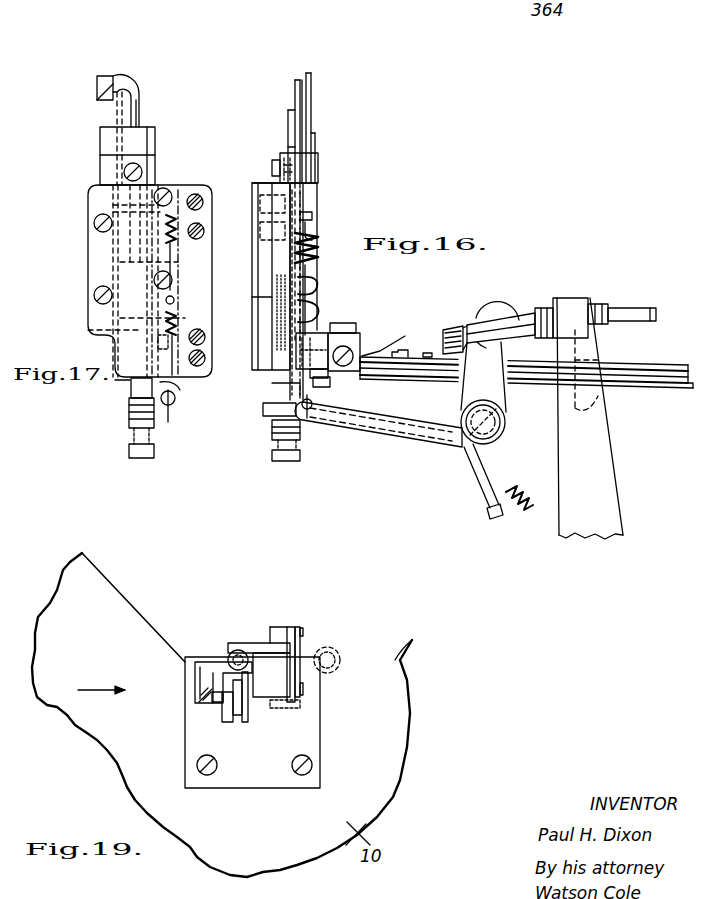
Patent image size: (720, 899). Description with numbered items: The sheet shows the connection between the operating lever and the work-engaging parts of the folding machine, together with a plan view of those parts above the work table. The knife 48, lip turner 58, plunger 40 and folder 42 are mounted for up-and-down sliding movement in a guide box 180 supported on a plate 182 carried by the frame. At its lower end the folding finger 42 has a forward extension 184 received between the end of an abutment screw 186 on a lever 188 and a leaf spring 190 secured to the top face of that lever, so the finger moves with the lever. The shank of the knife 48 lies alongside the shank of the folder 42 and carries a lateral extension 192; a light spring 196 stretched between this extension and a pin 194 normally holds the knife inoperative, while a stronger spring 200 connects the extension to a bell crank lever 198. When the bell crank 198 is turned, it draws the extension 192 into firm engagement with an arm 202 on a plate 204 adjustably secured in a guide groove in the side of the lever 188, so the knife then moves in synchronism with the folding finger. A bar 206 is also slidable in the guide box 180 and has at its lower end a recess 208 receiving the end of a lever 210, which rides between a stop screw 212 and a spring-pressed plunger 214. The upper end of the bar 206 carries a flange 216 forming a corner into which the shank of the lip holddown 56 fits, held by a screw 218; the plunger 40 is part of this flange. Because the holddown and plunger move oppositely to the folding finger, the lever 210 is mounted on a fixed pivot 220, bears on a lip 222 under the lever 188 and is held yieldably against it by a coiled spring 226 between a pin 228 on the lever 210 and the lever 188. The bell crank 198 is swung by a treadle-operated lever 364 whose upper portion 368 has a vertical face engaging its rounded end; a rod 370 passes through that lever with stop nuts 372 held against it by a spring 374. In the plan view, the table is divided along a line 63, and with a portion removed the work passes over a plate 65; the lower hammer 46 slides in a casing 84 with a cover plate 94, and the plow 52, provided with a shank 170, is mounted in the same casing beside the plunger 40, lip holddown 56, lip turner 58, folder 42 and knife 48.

In FIG. 17, the plunger 40 is at (107, 143).
In FIG. 16, the plunger 40 is at (313, 116).
In FIG. 19, the plunger 40 is at (200, 688).
In FIG. 17, the folder 42 is at (112, 120).
In FIG. 16, the folder 42 is at (294, 106).
In FIG. 19, the folder 42 is at (248, 655).
In FIG. 19, the lower hammer 46 is at (283, 665).
In FIG. 17, the knife blade 48 is at (106, 80).
In FIG. 16, the knife blade 48 is at (312, 80).
In FIG. 19, the knife blade 48 is at (250, 672).
In FIG. 19, the plow 52 is at (212, 690).
In FIG. 17, the lip holddown 56 is at (97, 88).
In FIG. 16, the lip holddown 56 is at (297, 80).
In FIG. 19, the lip holddown 56 is at (240, 718).
In FIG. 17, the lip turner 58 is at (140, 112).
In FIG. 16, the lip turner 58 is at (290, 108).
In FIG. 19, the lip turner 58 is at (250, 712).
In FIG. 19, the division line 63 is at (120, 595).
In FIG. 19, the plate 65 is at (306, 739).
In FIG. 19, the casing 84 is at (287, 645).
In FIG. 19, the cover plate 94 is at (336, 660).
In FIG. 19, the shank 170 is at (202, 660).
In FIG. 16, the guide box 180 is at (314, 228).
In FIG. 17, the plate 182 is at (88, 258).
In FIG. 16, the plate 182 is at (262, 248).
In FIG. 17, the forward extension 184 is at (92, 332).
In FIG. 16, the forward extension 184 is at (324, 340).
In FIG. 16, the abutment screw 186 is at (332, 389).
In FIG. 16, the lever 188 is at (535, 378).
In FIG. 16, the leaf spring 190 is at (396, 336).
In FIG. 17, the lateral extension 192 is at (185, 323).
In FIG. 16, the lateral extension 192 is at (317, 307).
In FIG. 17, the pin 194 is at (178, 207).
In FIG. 16, the pin 194 is at (296, 218).
In FIG. 17, the light spring 196 is at (175, 298).
In FIG. 16, the light spring 196 is at (316, 238).
In FIG. 17, the bell crank lever 198 is at (170, 422).
In FIG. 16, the bell crank lever 198 is at (380, 426).
In FIG. 17, the stronger spring 200 is at (190, 342).
In FIG. 16, the stronger spring 200 is at (318, 330).
In FIG. 17, the arm 202 is at (205, 350).
In FIG. 16, the arm 202 is at (271, 355).
In FIG. 16, the plate 204 is at (346, 332).
In FIG. 17, the bar 206 is at (122, 384).
In FIG. 16, the bar 206 is at (280, 393).
In FIG. 17, the recess 208 is at (180, 390).
In FIG. 17, the lever 210 is at (133, 412).
In FIG. 16, the lever 210 is at (276, 422).
In FIG. 17, the stop screw 212 is at (152, 452).
In FIG. 16, the stop screw 212 is at (278, 456).
In FIG. 17, the spring-pressed plunger 214 is at (133, 396).
In FIG. 16, the spring-pressed plunger 214 is at (265, 405).
In FIG. 17, the flange 216 is at (150, 163).
In FIG. 16, the flange 216 is at (285, 158).
In FIG. 19, the flange 216 is at (224, 718).
In FIG. 16, the screw 218 is at (274, 163).
In FIG. 19, the screw 218 is at (220, 703).
In FIG. 16, the fixed pivot 220 is at (462, 432).
In FIG. 16, the lip 222 is at (600, 396).
In FIG. 16, the coiled spring 226 is at (517, 490).
In FIG. 16, the pin 228 is at (483, 484).
In FIG. 16, the treadle-operated lever 364 is at (598, 446).
In FIG. 16, the portion 368 is at (572, 304).
In FIG. 16, the rod 370 is at (656, 312).
In FIG. 16, the stop nuts 372 is at (600, 306).
In FIG. 16, the spring 374 is at (540, 310).